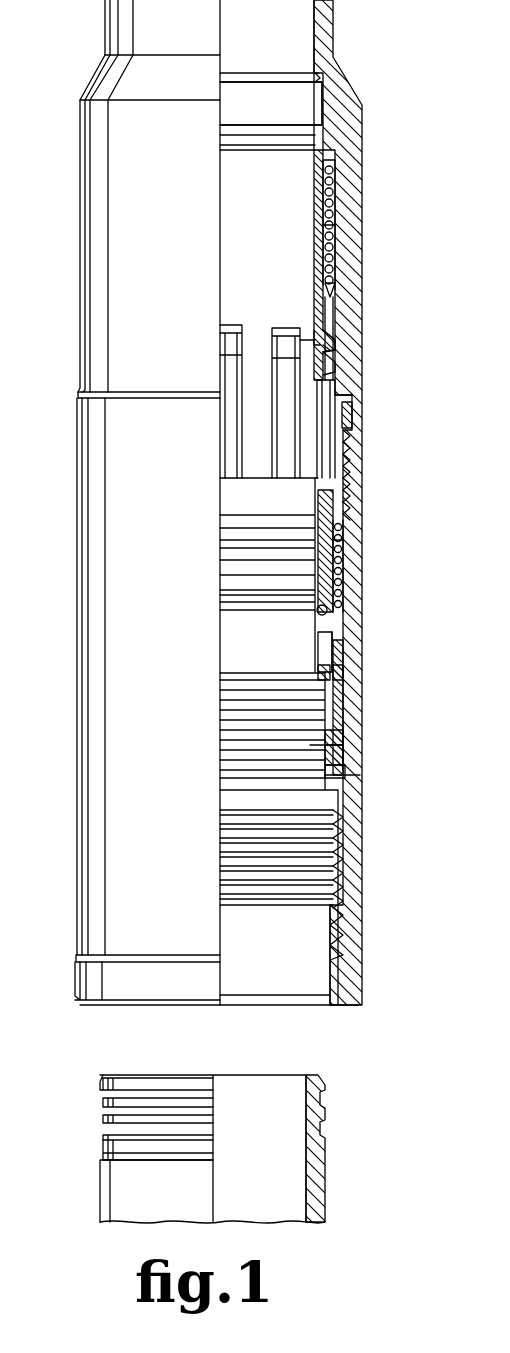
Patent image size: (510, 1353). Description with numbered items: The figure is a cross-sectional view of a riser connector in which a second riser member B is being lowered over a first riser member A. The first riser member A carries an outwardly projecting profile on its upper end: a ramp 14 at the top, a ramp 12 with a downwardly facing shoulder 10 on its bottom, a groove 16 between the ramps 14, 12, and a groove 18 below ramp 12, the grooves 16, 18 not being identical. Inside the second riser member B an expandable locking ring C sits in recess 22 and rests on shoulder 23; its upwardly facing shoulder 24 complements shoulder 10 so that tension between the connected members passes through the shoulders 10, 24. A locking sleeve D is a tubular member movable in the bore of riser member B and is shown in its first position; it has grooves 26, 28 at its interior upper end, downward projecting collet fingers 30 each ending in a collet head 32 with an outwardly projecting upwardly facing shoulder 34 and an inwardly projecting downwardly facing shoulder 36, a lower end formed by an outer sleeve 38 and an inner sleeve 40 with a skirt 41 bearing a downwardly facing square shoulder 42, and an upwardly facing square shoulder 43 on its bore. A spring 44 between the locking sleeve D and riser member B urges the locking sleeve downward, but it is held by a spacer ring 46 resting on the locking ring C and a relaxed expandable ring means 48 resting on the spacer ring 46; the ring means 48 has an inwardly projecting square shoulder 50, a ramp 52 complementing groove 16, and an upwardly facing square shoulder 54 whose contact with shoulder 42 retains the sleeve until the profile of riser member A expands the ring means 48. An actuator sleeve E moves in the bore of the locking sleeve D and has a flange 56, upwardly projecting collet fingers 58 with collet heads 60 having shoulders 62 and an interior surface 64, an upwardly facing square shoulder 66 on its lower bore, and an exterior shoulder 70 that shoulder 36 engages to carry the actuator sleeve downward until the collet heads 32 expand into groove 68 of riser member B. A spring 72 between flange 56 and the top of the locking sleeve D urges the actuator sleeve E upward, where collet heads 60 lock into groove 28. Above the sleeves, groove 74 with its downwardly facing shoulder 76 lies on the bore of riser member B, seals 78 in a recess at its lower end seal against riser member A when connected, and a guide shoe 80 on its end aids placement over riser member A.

The downwardly facing shoulder 10 is at (322, 1121).
The ramp 12 is at (322, 1110).
The ramp 14 is at (320, 1083).
The groove 16 is at (321, 1092).
The groove 18 is at (322, 1138).
The recess 22 is at (346, 770).
The shoulder 23 is at (345, 778).
The upwardly facing shoulder 24 is at (330, 745).
The groove 26 is at (334, 310).
The groove 28 is at (332, 352).
The collet finger 30 is at (352, 412).
The collet head 32 is at (345, 478).
The outwardly projecting upwardly facing shoulder 34 is at (347, 455).
The inwardly projecting downwardly facing shoulder 36 is at (345, 505).
The outer sleeve 38 is at (340, 705).
The inner sleeve 40 is at (318, 645).
The flange or skirt 41 is at (318, 657).
The downwardly facing square shoulder 42 is at (318, 668).
The upwardly facing square shoulder 43 is at (326, 608).
The spring 44 is at (340, 572).
The spacer ring 46 is at (345, 752).
The expandable ring means 48 is at (343, 735).
The inwardly projecting square shoulder 50 is at (335, 700).
The ramp 52 is at (335, 725).
The upwardly facing square shoulder 54 is at (345, 672).
The flange 56 is at (340, 165).
The collet finger 58 is at (316, 415).
The collet head 60 is at (330, 370).
The upwardly facing outwardly pointing shoulder 62 is at (334, 342).
The interior surface 64 is at (316, 340).
The upwardly facing square shoulder 66 is at (318, 545).
The groove 68 is at (335, 515).
The upwardly facing shoulder 70 is at (318, 480).
The spring 72 is at (350, 230).
The groove 74 is at (320, 105).
The downwardly facing shoulder 76 is at (318, 78).
The seals 78 is at (341, 852).
The guide shoe 80 is at (345, 985).
The first riser member A is at (318, 1195).
The second riser member B is at (362, 132).
The expandable locking ring C is at (325, 775).
The locking sleeve D is at (336, 295).
The actuator sleeve E is at (318, 225).